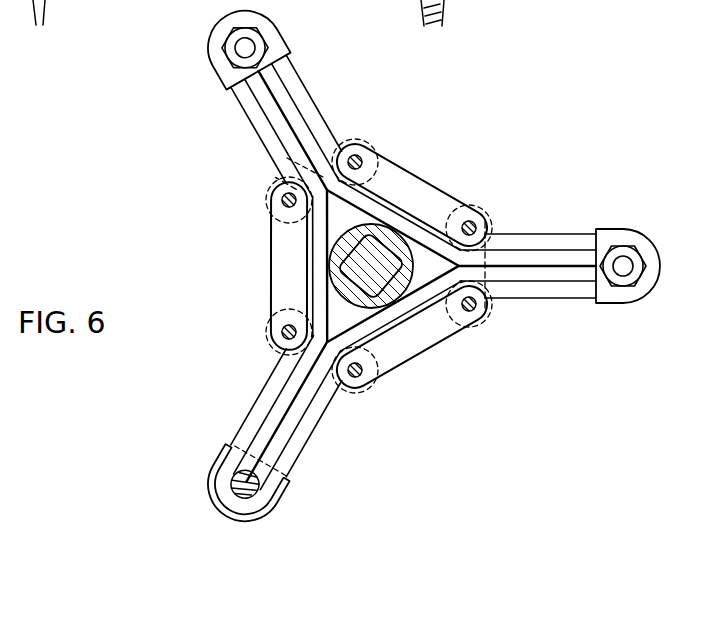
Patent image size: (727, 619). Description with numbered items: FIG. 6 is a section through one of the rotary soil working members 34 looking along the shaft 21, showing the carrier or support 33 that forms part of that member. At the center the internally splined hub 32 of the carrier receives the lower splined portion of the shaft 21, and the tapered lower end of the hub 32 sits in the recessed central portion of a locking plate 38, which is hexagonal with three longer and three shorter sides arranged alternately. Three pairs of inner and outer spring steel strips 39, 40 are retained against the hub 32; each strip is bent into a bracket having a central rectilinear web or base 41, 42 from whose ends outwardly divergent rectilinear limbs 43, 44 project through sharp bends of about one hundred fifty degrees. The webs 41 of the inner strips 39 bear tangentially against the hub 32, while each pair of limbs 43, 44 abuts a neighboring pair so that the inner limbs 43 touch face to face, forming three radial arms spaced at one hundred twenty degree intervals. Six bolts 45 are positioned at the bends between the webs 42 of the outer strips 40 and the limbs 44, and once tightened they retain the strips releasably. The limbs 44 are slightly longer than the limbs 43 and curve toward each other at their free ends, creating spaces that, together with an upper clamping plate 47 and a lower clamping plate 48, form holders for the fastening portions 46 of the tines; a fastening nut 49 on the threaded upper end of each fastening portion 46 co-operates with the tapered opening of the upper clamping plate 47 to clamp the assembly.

The shaft 21 is at (362, 298).
The hub 32 is at (348, 237).
The carrier or support 33 is at (323, 104).
The rotary soil working member 34 is at (215, 198).
The locking plate 38 is at (271, 277).
The inner spring steel strip 39 is at (520, 267).
The outer spring steel strip 40 is at (560, 283).
The web or base 41 is at (383, 204).
The web or base 42 is at (412, 208).
The rectilinear limb 43 is at (485, 248).
The rectilinear limb 44 is at (288, 73).
The bolt 45 is at (357, 154).
The fastening portion 46 is at (259, 490).
The upper clamping plate 47 is at (214, 62).
The lower clamping plate 48 is at (222, 463).
The fastening nut 49 is at (262, 40).